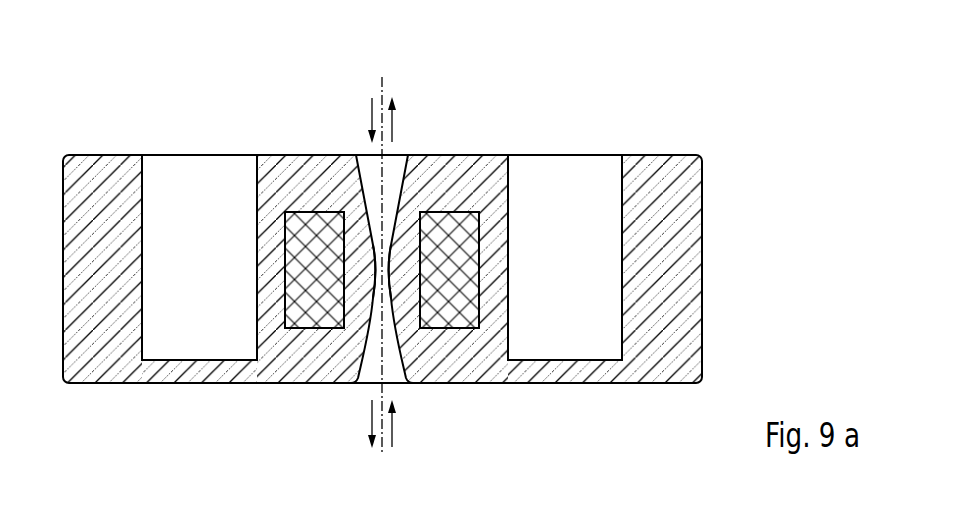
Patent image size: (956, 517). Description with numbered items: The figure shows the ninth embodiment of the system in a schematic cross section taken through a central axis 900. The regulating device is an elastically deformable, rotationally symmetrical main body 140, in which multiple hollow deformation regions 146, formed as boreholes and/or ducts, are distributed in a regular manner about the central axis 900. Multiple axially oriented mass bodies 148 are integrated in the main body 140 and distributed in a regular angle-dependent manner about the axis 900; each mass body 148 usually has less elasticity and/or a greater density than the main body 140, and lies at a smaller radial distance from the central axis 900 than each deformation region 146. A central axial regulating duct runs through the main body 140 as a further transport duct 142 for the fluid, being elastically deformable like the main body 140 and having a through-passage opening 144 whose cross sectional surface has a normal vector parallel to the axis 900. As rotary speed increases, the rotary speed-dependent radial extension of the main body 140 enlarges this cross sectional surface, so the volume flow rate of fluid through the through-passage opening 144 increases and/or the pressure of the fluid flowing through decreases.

The main body 140 is at (702, 235).
The transport duct 142 is at (368, 165).
The through-passage opening 144 is at (390, 272).
The deformation region 146 is at (203, 202).
The mass body 148 is at (308, 243).
The central axis 900 is at (383, 90).